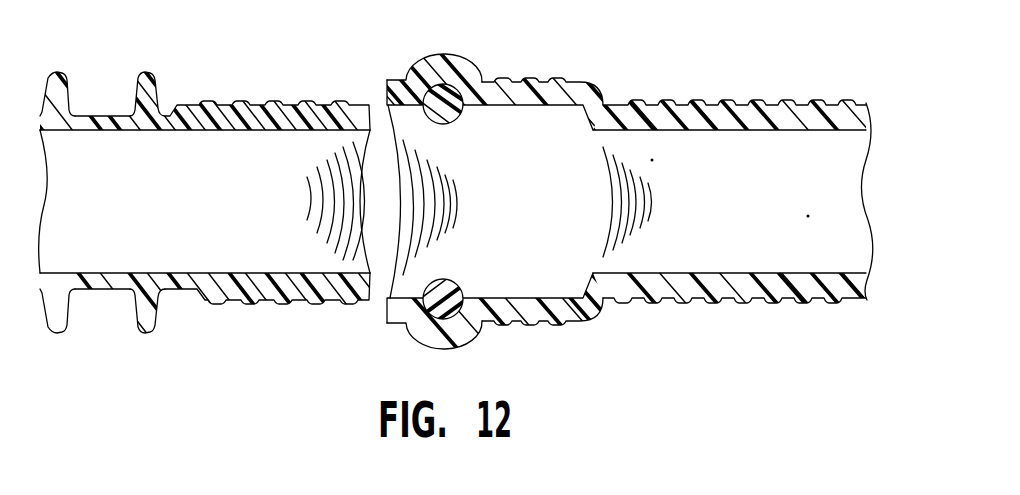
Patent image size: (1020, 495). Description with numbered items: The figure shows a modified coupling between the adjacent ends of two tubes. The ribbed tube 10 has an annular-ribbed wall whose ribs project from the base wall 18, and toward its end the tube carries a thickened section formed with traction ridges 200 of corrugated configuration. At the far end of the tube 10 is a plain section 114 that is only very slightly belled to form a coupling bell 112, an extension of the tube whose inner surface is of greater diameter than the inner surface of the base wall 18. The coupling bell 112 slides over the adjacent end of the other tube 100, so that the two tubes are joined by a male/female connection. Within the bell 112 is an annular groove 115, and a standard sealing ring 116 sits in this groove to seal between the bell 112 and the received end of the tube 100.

The ribbed tube 10 is at (204, 178).
The base wall 18 is at (52, 132).
The traction ridges 200 is at (240, 104).
The plain section 114 is at (235, 131).
The coupling bell 112 is at (473, 200).
The annular groove 115 is at (411, 90).
The sealing ring 116 is at (457, 118).
The tube 100 is at (777, 132).